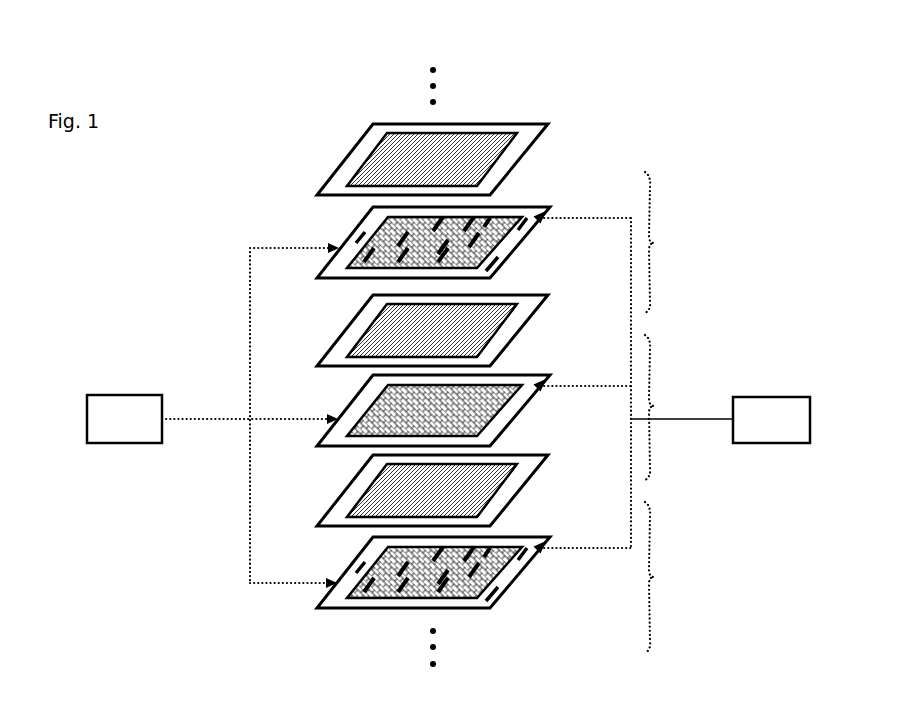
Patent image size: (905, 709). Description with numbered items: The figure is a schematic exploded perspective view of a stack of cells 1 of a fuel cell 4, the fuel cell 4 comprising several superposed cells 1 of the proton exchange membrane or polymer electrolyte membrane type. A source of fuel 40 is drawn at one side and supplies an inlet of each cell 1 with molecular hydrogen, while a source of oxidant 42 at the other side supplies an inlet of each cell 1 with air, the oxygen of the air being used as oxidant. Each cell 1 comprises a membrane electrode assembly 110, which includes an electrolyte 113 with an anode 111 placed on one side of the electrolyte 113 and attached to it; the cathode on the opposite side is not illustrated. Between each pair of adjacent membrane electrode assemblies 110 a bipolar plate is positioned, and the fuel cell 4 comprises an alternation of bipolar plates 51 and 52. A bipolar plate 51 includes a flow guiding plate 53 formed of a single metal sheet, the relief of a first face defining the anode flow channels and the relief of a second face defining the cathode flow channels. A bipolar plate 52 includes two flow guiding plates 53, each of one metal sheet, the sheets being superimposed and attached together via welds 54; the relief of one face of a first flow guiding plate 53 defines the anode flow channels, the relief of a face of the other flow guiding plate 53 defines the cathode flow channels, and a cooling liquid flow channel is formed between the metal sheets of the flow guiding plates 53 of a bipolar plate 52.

The cell 1 is at (479, 412).
The fuel cell 4 is at (672, 131).
The source of fuel 40 is at (110, 432).
The source of oxidant 42 is at (757, 432).
The bipolar plate 51 is at (533, 410).
The bipolar plate 52 is at (533, 243).
The flow guiding plate 53 is at (366, 226).
The weld 54 is at (486, 269).
The membrane electrode assembly 110 is at (533, 159).
The anode 111 is at (368, 161).
The electrolyte 113 is at (370, 162).